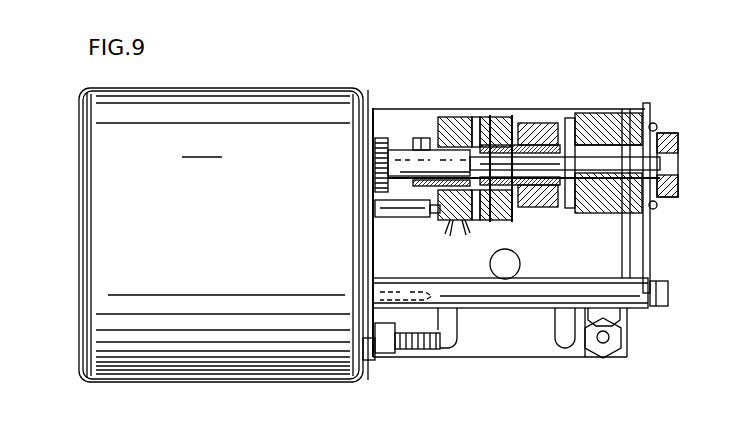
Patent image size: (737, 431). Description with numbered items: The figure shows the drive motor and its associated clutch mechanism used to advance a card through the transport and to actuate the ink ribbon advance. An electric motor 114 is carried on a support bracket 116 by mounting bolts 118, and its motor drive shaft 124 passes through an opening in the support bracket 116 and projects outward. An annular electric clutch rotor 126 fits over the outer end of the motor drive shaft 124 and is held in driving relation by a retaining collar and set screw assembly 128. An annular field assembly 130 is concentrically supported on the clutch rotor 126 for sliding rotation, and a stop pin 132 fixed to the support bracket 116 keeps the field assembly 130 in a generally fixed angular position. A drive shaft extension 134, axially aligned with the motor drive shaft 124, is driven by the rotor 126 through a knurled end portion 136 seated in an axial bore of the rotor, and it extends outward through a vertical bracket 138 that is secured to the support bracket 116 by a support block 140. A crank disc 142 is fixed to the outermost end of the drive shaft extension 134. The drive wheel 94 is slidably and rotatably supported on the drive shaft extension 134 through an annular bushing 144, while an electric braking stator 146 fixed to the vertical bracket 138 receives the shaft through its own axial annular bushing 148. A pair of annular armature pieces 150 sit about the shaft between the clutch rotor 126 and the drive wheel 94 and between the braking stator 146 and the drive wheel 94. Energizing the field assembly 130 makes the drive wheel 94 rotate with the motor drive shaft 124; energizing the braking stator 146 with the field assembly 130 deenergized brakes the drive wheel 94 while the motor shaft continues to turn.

The drive wheel 94 is at (555, 215).
The electric motor 114 is at (110, 236).
The support bracket 116 is at (368, 358).
The mounting bolts 118 is at (413, 355).
The motor drive shaft 124 is at (400, 138).
The electric clutch rotor 126 is at (488, 117).
The retaining collar and set screw assembly 128 is at (413, 138).
The field assembly 130 is at (460, 117).
The stop pin 132 is at (413, 218).
The drive shaft extension 134 is at (655, 172).
The knurled end portion 136 is at (500, 220).
The vertical bracket 138 is at (650, 263).
The support block 140 is at (533, 308).
The crank disc 142 is at (679, 190).
The annular bushing 144 is at (556, 123).
The electric braking stator 146 is at (640, 113).
The annular bushing 148 is at (650, 135).
The annular armature pieces 150 is at (530, 145).